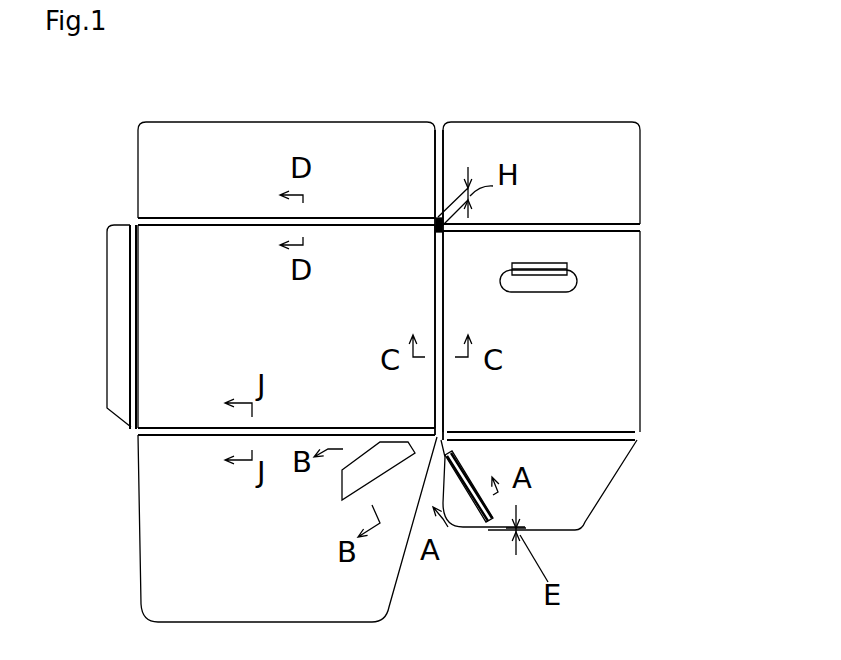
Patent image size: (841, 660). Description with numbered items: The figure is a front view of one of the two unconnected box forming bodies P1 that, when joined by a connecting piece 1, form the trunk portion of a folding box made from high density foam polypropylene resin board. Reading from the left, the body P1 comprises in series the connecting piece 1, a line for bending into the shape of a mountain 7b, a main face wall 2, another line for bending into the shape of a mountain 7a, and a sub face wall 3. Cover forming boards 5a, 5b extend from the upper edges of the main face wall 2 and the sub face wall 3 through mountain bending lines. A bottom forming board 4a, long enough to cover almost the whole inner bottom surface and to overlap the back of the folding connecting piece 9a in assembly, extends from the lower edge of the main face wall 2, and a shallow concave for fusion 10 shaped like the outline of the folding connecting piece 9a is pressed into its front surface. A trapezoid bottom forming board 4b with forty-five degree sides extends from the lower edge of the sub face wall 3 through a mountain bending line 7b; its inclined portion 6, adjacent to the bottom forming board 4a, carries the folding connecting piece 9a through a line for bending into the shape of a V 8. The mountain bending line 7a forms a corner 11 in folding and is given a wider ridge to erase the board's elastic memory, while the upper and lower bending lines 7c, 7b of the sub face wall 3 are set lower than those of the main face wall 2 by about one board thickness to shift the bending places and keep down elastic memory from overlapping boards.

The box forming body P1 is at (722, 150).
The connecting piece 1 is at (117, 306).
The main face wall 2 is at (247, 341).
The sub face wall 3 is at (568, 351).
The bottom forming board 4a is at (184, 578).
The trapezoid bottom forming board 4b is at (585, 480).
The cover forming board 5a is at (335, 165).
The cover forming board 5b is at (559, 167).
The inclined portion 6 is at (470, 468).
The line for bending into the shape of a mountain 7a is at (435, 293).
The line for bending into the shape of a mountain 7b is at (128, 386).
The line for bending into the shape of a mountain 7c is at (147, 221).
The line for bending into the shape of a V 8 is at (483, 525).
The folding connecting piece 9a is at (463, 515).
The concave for fusion 10 is at (345, 478).
The corner 11 is at (432, 262).